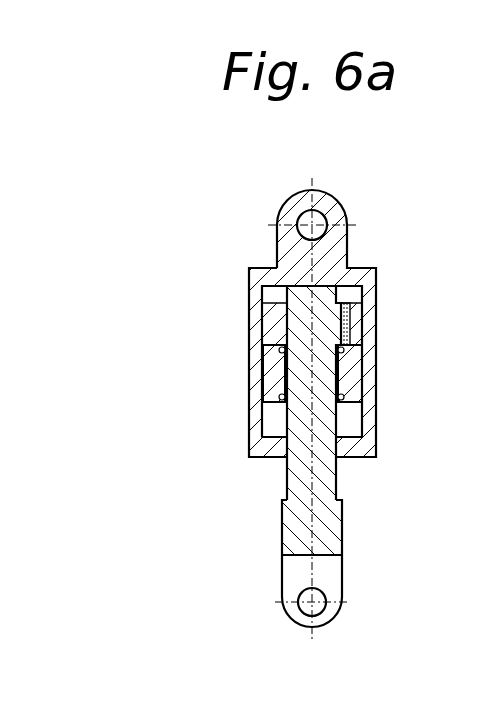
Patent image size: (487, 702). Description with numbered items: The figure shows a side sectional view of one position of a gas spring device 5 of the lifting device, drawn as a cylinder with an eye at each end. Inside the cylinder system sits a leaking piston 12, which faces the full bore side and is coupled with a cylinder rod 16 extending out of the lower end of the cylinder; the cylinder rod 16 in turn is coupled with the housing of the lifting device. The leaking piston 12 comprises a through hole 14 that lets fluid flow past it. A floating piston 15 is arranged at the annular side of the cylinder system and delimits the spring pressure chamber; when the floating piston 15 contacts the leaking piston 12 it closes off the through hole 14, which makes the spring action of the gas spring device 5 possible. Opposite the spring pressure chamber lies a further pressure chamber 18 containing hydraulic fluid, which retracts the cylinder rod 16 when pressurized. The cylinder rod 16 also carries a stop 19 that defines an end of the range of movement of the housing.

The gas spring device 5 is at (217, 424).
The leaking piston 12 is at (296, 329).
The through hole 14 is at (345, 327).
The floating piston 15 is at (349, 380).
The cylinder rod 16 is at (325, 527).
The further pressure chamber 18 is at (273, 423).
The stop 19 is at (320, 286).